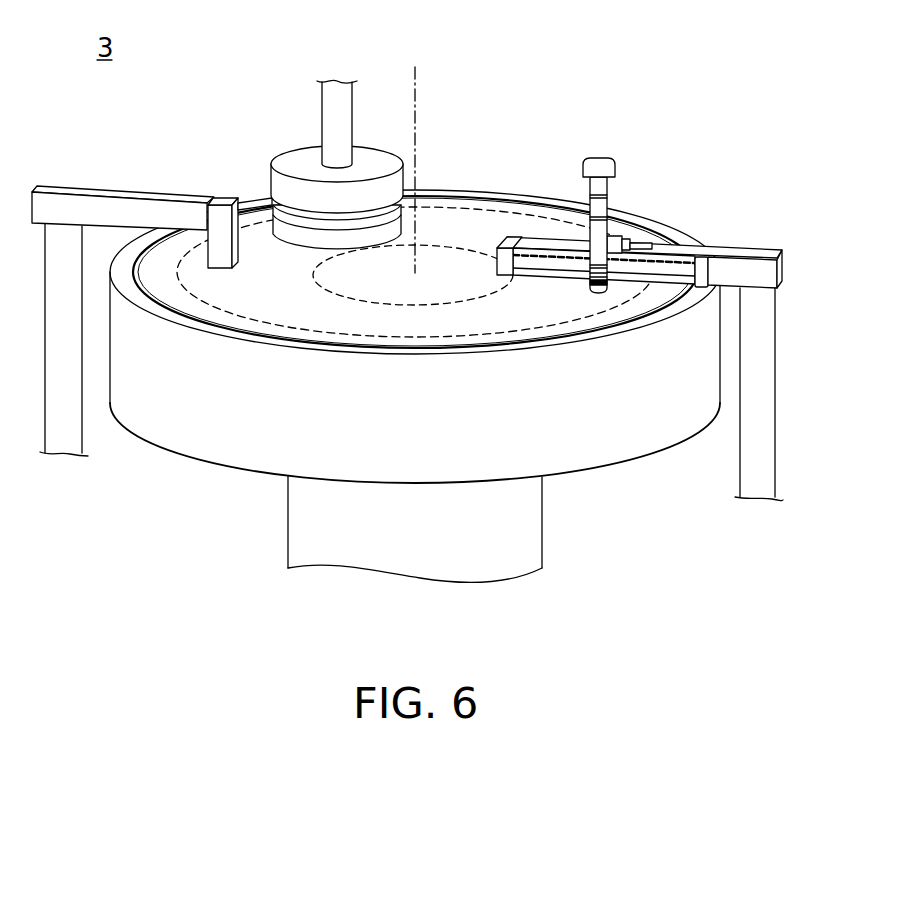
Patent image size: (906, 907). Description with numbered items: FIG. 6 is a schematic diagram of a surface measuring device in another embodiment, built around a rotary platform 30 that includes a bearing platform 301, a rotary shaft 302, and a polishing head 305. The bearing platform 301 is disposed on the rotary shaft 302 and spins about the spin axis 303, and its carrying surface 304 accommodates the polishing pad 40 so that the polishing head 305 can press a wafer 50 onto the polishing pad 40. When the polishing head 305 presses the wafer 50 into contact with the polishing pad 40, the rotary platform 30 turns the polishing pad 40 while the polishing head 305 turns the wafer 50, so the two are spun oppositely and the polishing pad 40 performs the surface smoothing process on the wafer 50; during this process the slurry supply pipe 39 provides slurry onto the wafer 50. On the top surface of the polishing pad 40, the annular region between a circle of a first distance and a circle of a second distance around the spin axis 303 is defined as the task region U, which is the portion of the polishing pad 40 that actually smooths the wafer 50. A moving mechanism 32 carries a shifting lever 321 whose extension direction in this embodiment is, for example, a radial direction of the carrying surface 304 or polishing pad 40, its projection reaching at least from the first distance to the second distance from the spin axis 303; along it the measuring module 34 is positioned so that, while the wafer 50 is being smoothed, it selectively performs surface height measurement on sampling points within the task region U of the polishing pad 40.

The rotary platform 30 is at (415, 352).
The bearing platform 301 is at (225, 403).
The rotary shaft 302 is at (325, 523).
The spin axis 303 is at (418, 87).
The carrying surface 304 is at (447, 193).
The polishing head 305 is at (332, 112).
The wafer 50 is at (280, 252).
The slurry supply pipe 39 is at (163, 196).
The moving mechanism 32 is at (640, 337).
The shifting lever 321 is at (680, 250).
The measuring module 34 is at (599, 157).
The polishing pad 40 is at (497, 207).
The task region U is at (542, 220).